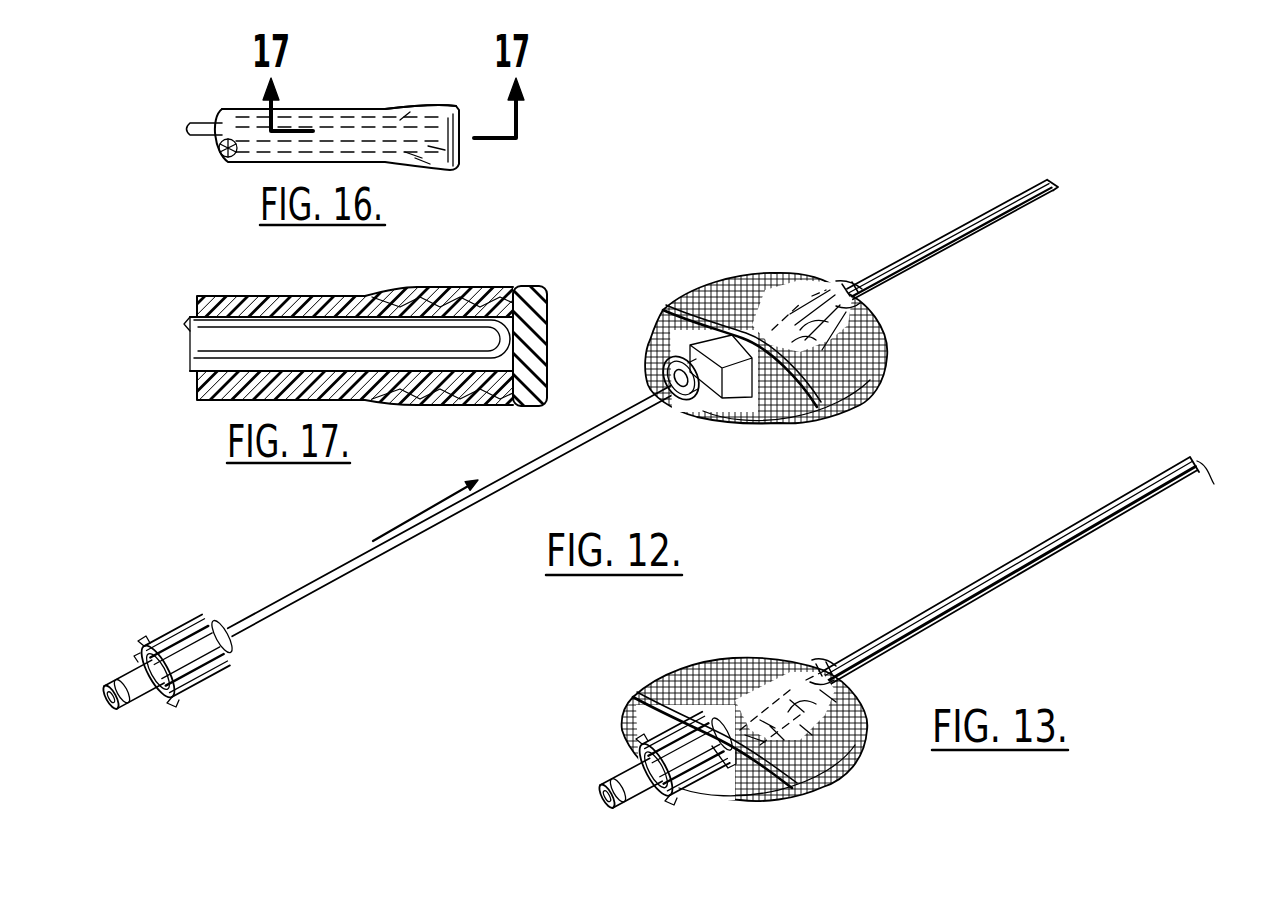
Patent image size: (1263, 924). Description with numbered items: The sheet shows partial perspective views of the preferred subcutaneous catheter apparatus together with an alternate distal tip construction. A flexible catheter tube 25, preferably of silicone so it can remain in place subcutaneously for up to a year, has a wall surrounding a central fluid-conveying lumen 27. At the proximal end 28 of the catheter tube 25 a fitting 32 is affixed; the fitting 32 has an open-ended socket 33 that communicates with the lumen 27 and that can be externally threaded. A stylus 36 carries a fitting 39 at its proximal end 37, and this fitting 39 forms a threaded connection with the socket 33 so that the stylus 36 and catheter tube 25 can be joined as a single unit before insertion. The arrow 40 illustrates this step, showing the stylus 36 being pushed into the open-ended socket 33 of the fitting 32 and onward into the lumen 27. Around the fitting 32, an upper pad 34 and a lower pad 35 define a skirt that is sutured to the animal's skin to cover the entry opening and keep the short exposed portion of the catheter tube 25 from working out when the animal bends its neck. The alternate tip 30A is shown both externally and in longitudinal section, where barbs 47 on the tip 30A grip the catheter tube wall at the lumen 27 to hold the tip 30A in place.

In FIG. 16, the catheter tube 25 is at (232, 108).
In FIG. 17, the catheter tube 25 is at (225, 293).
In FIG. 12, the catheter tube 25 is at (1018, 214).
In FIG. 13, the catheter tube 25 is at (1000, 571).
In FIG. 17, the lumen 27 is at (180, 323).
In FIG. 12, the proximal end 28 is at (858, 296).
In FIG. 13, the proximal end 28 is at (846, 674).
In FIG. 16, the tip 30A is at (458, 108).
In FIG. 17, the tip 30A is at (374, 349).
In FIG. 12, the fitting 32 is at (689, 403).
In FIG. 12, the open-ended socket 33 is at (656, 380).
In FIG. 12, the upper pad 34 is at (784, 288).
In FIG. 13, the upper pad 34 is at (758, 664).
In FIG. 12, the lower pad 35 is at (764, 418).
In FIG. 13, the lower pad 35 is at (746, 785).
In FIG. 16, the stylus 36 is at (222, 150).
In FIG. 17, the stylus 36 is at (208, 348).
In FIG. 12, the stylus 36 is at (424, 535).
In FIG. 12, the proximal end 37 is at (222, 630).
In FIG. 13, the proximal end 37 is at (684, 758).
In FIG. 12, the fitting 39 is at (200, 702).
In FIG. 13, the fitting 39 is at (638, 805).
In FIG. 12, the arrow 40 is at (432, 505).
In FIG. 17, the barbs 47 is at (463, 302).